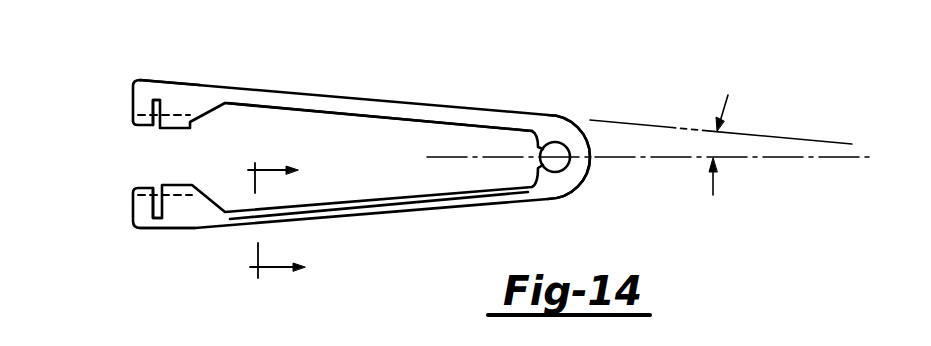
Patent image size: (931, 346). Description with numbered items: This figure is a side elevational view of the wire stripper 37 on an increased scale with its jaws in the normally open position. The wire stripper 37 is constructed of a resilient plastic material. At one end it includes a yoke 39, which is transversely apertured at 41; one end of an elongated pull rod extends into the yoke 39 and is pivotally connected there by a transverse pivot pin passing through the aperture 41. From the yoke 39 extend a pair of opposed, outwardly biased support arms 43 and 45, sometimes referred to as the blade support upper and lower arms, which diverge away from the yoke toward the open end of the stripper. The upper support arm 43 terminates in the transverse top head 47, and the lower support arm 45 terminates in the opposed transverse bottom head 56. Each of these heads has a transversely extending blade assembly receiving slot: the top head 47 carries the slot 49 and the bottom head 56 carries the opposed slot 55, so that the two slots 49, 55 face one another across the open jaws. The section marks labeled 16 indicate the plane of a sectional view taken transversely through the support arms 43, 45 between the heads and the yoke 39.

The wire stripper 37 is at (474, 107).
The yoke 39 is at (573, 180).
The transverse aperture 41 is at (553, 150).
The upper support arm 43 is at (410, 103).
The lower support arm 45 is at (383, 217).
The top head 47 is at (198, 100).
The blade assembly receiving slot 49 is at (148, 127).
The blade assembly receiving slot 55 is at (155, 191).
The bottom head 56 is at (183, 218).
The section line 16- 16 is at (296, 214).